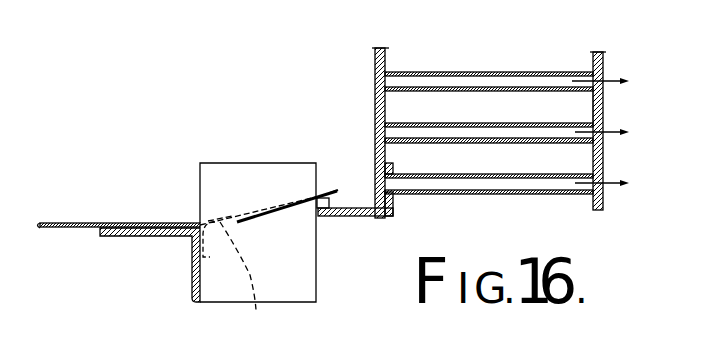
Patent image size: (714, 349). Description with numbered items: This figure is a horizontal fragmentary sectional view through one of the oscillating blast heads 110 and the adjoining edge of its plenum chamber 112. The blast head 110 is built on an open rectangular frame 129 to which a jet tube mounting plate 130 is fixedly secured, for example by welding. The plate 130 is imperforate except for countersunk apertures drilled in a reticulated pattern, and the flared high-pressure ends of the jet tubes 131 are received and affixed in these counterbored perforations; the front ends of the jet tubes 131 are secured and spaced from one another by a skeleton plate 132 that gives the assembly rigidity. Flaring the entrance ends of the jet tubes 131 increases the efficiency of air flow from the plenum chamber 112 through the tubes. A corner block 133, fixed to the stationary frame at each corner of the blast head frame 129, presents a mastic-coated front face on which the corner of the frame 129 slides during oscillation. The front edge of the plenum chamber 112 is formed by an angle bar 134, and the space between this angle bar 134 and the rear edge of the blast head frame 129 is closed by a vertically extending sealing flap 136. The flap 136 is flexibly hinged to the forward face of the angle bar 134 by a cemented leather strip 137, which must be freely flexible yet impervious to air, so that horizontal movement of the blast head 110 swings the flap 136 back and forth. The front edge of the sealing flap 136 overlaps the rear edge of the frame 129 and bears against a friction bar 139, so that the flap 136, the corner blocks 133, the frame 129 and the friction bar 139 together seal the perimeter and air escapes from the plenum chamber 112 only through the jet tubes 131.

The blast head 110 is at (610, 60).
The plenum chamber 112 is at (72, 232).
The open rectangular frame 129 is at (358, 216).
The jet tube mounting plate 130 is at (388, 54).
The jet tube 131 is at (497, 72).
The skeleton plate 132 is at (604, 112).
The corner block 133 is at (317, 273).
The angle bar 134 is at (188, 290).
The vertically extending sealing flap 136 is at (322, 194).
The cemented leather strip 137 is at (256, 310).
The friction bar 139 is at (336, 200).